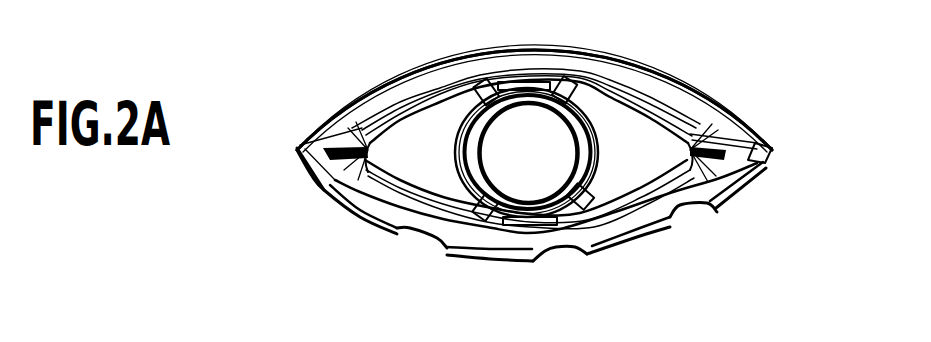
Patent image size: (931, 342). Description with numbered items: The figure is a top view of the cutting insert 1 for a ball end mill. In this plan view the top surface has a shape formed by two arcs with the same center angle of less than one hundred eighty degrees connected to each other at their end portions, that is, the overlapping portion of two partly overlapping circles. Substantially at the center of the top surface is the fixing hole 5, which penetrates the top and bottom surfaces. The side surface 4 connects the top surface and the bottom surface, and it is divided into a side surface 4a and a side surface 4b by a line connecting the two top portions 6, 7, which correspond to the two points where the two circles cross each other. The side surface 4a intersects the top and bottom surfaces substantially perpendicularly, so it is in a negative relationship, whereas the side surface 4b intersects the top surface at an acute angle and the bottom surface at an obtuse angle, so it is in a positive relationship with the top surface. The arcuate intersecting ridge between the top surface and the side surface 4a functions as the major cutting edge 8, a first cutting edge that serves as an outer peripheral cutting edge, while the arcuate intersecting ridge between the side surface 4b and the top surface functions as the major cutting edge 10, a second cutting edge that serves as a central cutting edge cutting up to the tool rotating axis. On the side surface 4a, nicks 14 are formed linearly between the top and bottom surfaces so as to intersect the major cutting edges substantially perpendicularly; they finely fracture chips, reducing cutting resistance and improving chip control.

The cutting insert 1 is at (733, 66).
The side surface 4 is at (265, 20).
The side surface 4a is at (304, 166).
The side surface 4b is at (320, 126).
The fixing hole 5 is at (553, 179).
The top portion 6 is at (768, 146).
The top portion 7 is at (295, 146).
The major cutting edge 8 is at (354, 216).
The major cutting edge 10 is at (462, 56).
The nick 14 is at (422, 236).